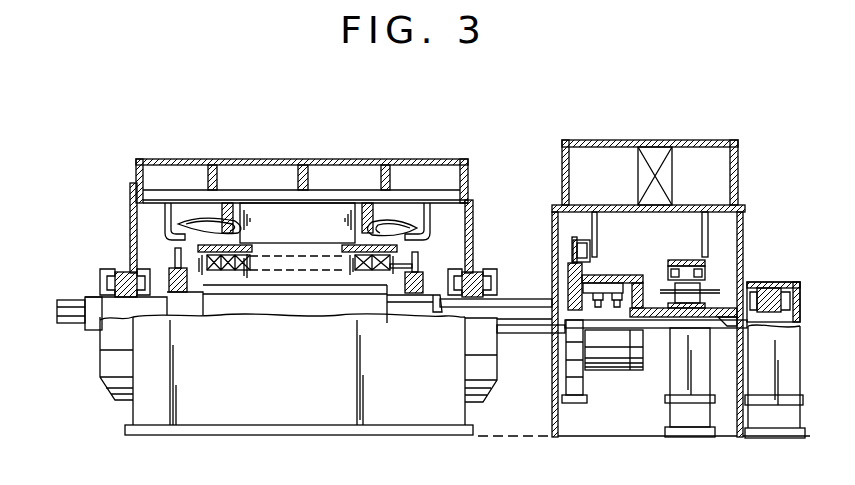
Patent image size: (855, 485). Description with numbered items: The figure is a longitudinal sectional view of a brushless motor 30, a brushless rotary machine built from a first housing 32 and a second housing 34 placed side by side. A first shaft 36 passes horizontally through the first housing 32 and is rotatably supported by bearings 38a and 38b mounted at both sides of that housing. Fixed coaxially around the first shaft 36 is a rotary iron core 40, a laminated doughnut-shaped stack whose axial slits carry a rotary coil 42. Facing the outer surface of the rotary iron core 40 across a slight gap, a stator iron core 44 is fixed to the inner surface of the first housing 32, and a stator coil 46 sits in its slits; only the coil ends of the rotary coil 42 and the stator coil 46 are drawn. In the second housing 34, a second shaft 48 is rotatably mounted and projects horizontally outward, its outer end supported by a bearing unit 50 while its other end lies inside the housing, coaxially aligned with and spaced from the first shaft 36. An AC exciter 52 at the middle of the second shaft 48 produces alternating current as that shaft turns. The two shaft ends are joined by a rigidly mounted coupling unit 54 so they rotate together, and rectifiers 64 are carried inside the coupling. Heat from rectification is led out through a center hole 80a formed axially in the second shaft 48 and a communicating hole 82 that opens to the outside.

The brushless motor 30 is at (507, 158).
The first housing 32 is at (390, 158).
The second housing 34 is at (680, 141).
The first shaft 36 is at (460, 274).
The bearing 38a is at (116, 270).
The bearing 38b is at (504, 285).
The rotary iron core 40 is at (270, 272).
The rotary coil 42 is at (420, 266).
The stator iron core 44 is at (281, 213).
The stator coil 46 is at (404, 222).
The second shaft 48 is at (742, 292).
The bearing unit 50 is at (782, 282).
The AC exciter 52 is at (706, 268).
The coupling unit 54 is at (604, 270).
The rectifier 64 is at (605, 330).
The center hole 80a is at (662, 323).
The communicating hole 82 is at (733, 292).